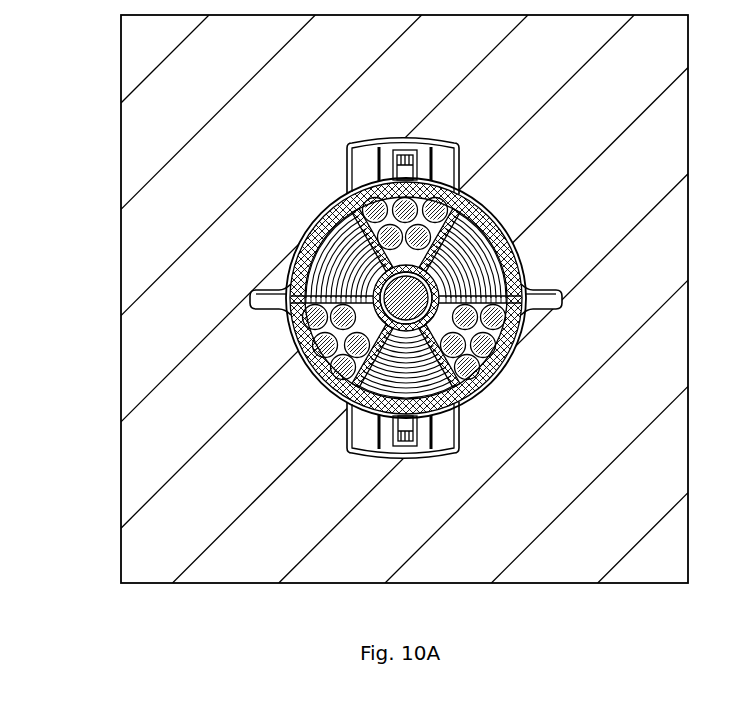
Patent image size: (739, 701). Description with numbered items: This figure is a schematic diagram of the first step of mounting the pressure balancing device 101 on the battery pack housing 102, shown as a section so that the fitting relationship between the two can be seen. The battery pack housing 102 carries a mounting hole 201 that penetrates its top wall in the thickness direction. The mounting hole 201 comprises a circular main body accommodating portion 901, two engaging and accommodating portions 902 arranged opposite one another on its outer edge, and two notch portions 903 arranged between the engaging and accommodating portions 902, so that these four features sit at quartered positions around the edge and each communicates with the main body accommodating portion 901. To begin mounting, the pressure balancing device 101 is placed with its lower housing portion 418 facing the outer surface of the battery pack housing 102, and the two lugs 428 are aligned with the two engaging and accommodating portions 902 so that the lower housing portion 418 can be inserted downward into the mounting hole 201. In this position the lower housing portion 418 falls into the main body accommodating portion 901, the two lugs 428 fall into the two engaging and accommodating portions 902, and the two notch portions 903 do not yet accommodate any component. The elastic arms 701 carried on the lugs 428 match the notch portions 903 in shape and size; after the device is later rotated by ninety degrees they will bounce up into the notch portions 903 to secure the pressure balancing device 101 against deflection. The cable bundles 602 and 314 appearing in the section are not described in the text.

The pressure balancing device 101 is at (338, 197).
The battery pack housing 102 is at (135, 186).
The mounting hole 201 is at (285, 258).
The cable bundle 314 is at (524, 330).
The lower housing portion 418 is at (493, 198).
The lug 428 is at (433, 157).
The cable bundle 602 is at (300, 372).
The elastic arm 701 is at (407, 440).
The main body accommodating portion 901 is at (523, 265).
The engaging and accommodating portion 902 is at (380, 140).
The notch portion 903 is at (256, 310).